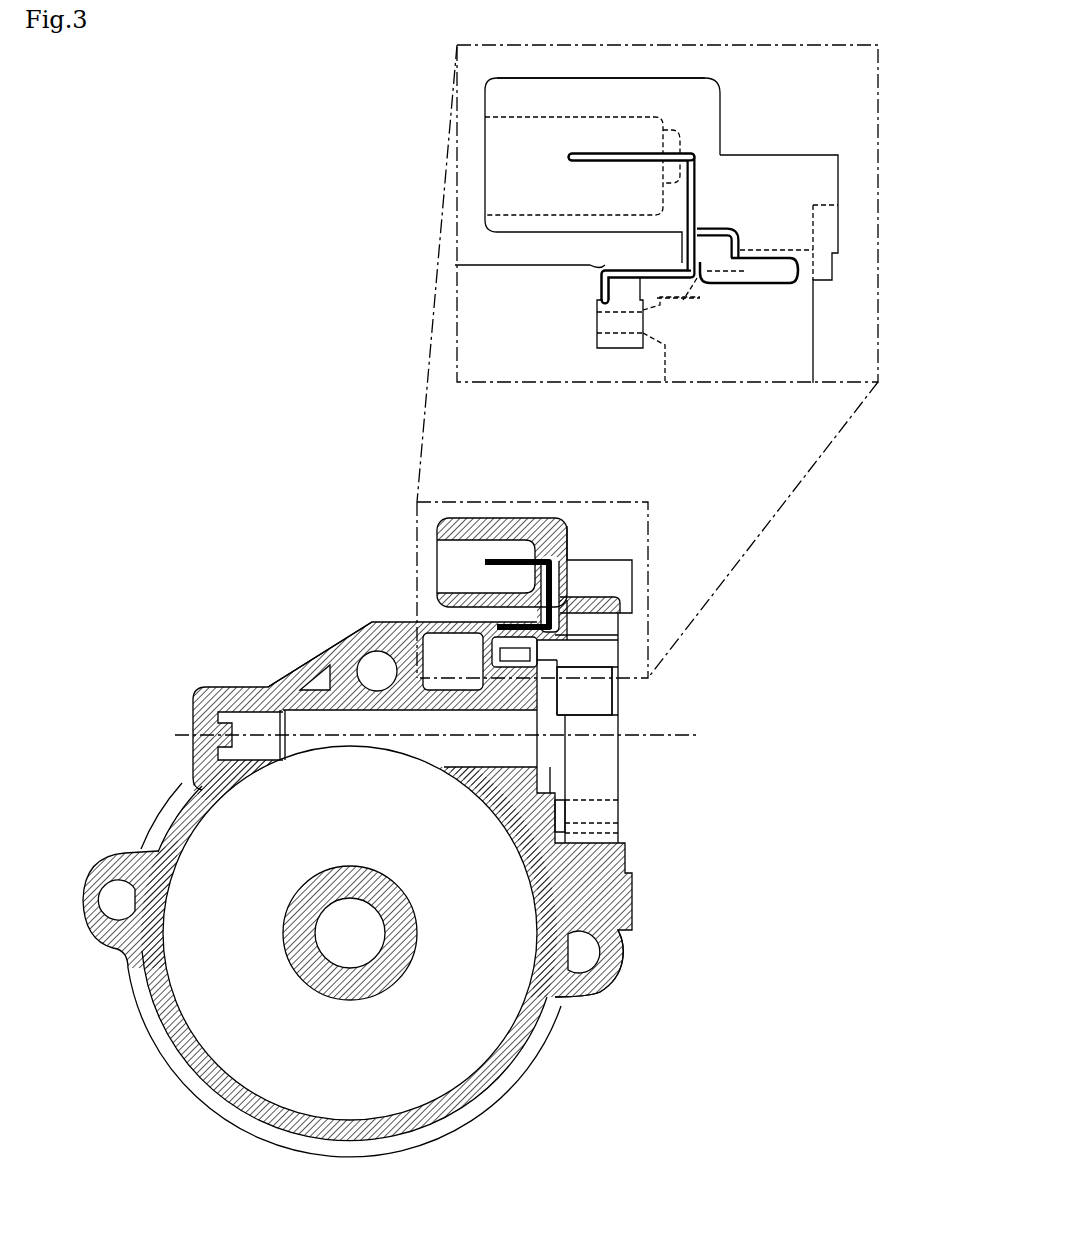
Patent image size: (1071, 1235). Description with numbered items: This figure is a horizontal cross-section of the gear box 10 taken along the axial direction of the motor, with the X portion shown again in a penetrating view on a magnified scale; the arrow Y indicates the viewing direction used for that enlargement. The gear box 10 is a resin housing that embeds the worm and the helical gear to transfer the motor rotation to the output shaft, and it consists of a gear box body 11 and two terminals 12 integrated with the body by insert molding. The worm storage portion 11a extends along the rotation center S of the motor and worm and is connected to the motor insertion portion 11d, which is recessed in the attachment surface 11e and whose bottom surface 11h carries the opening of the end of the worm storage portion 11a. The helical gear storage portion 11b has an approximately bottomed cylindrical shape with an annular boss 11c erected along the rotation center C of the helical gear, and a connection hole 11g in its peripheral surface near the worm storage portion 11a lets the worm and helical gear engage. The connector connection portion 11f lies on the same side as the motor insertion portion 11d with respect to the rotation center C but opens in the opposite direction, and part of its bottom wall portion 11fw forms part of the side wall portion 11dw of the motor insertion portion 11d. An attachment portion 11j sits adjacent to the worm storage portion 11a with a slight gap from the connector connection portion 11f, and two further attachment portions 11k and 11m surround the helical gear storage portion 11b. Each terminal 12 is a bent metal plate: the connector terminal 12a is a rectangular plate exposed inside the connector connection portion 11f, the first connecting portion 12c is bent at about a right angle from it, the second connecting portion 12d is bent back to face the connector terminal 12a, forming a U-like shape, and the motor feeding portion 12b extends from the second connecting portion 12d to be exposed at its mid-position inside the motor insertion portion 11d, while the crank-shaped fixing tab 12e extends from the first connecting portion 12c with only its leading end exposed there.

The gear box 10 is at (185, 632).
The gear box body 11 is at (640, 908).
The worm storage portion 11a is at (310, 718).
The helical gear storage portion 11b is at (195, 1005).
The boss 11c is at (290, 977).
The motor insertion portion 11d is at (600, 760).
The attachment surface 11e is at (620, 703).
The connector connection portion 11f is at (450, 548).
The bottom wall portion 11fw is at (712, 136).
The side wall portion 11dw is at (790, 168).
The connection hole 11g is at (343, 750).
The bottom surface 11h is at (545, 782).
The attachment portion 11j is at (340, 638).
The attachment portion 11k is at (118, 858).
The attachment portion 11m is at (595, 997).
The terminal 12 is at (475, 567).
The connector terminal 12a is at (505, 560).
The motor feeding portion 12b is at (617, 323).
The first connecting portion 12c is at (552, 580).
The second connecting portion 12d is at (520, 615).
The fixing tab 12e is at (782, 292).
The rotation center S is at (450, 736).
The rotation center C is at (350, 935).
The X portion X is at (415, 515).
The viewing direction Y is at (730, 605).